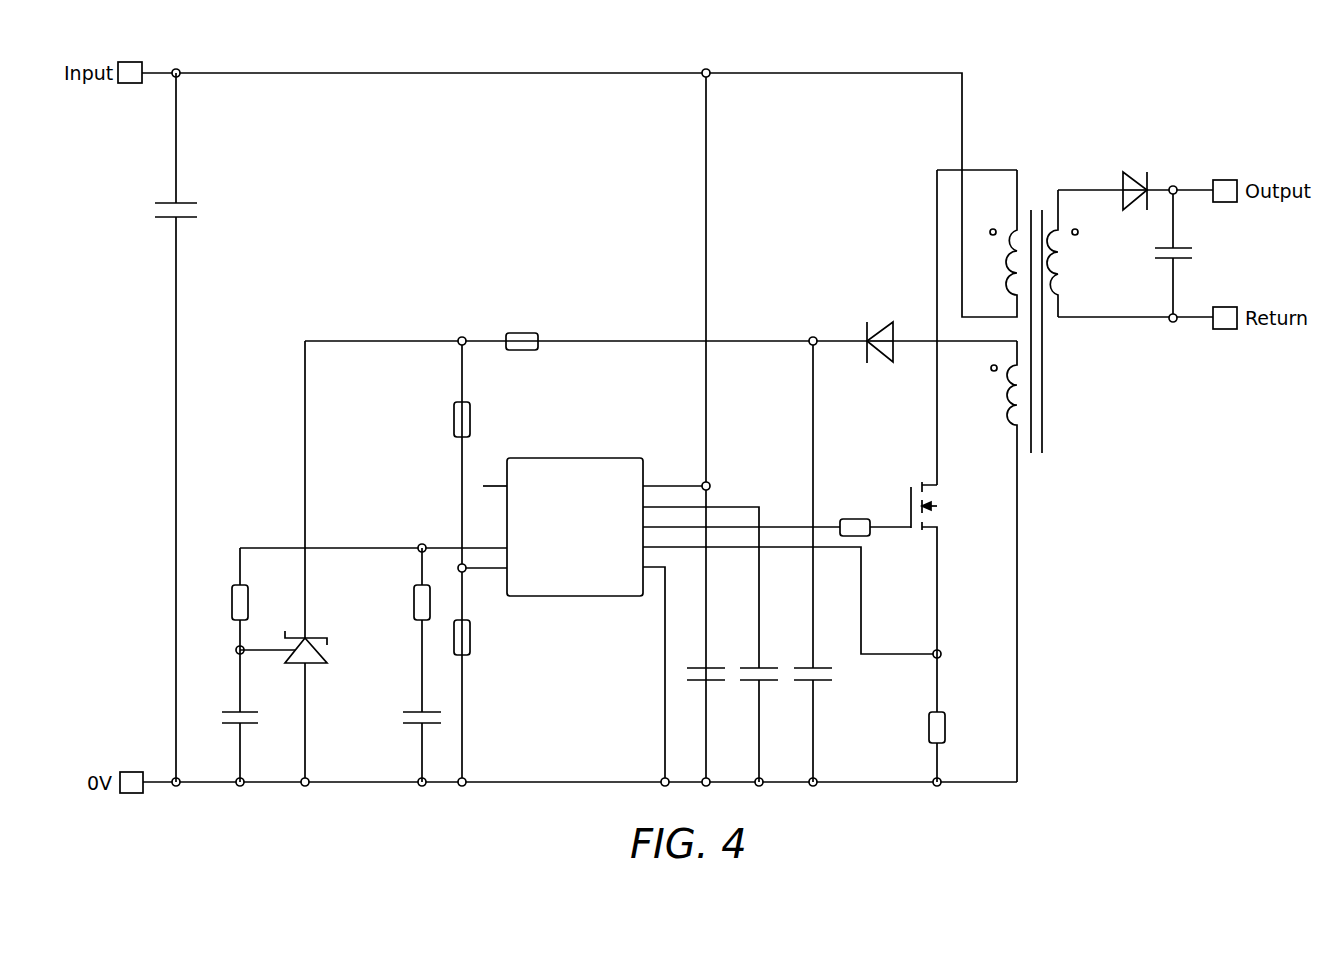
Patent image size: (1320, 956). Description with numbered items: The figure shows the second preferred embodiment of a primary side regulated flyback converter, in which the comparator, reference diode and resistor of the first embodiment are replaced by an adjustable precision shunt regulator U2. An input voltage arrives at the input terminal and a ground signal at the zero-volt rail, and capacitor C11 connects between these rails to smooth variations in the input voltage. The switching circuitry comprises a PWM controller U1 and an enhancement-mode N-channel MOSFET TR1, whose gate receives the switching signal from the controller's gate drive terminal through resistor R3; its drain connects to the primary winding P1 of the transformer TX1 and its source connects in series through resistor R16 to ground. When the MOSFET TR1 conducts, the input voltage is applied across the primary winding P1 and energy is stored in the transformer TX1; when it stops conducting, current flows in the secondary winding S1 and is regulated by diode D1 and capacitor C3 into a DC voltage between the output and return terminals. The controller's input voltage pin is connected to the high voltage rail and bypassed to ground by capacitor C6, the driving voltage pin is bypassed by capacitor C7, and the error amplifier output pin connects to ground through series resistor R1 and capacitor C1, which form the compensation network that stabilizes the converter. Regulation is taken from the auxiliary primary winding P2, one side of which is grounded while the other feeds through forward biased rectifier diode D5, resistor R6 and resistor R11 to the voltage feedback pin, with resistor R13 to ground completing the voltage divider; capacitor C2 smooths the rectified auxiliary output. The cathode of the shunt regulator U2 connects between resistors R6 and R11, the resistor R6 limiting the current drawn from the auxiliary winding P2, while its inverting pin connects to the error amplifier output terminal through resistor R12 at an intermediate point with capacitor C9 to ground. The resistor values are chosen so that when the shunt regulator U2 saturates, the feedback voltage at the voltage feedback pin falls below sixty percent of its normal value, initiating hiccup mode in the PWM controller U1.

The capacitor C11 is at (197, 427).
The resistor R6 is at (522, 328).
The resistor R11 is at (439, 419).
The PWM controller U1 is at (575, 514).
The resistor R12 is at (218, 599).
The adjustable precision shunt regulator U2 is at (304, 650).
The resistor R1 is at (407, 630).
The resistor R13 is at (484, 637).
The capacitor C9 is at (256, 716).
The capacitor C1 is at (406, 743).
The capacitor C6 is at (712, 661).
The capacitor C7 is at (766, 712).
The capacitor C2 is at (820, 712).
The resistor R3 is at (875, 516).
The switching MOSFET TR1 is at (914, 568).
The resistor R16 is at (915, 718).
The rectifier diode D5 is at (879, 328).
The transformer TX1 is at (1056, 331).
The primary transformer winding P1 is at (989, 243).
The auxiliary primary side transformer winding P2 is at (996, 561).
The secondary transformer winding S1 is at (1069, 253).
The diode D1 is at (1135, 176).
The capacitor C3 is at (1190, 250).